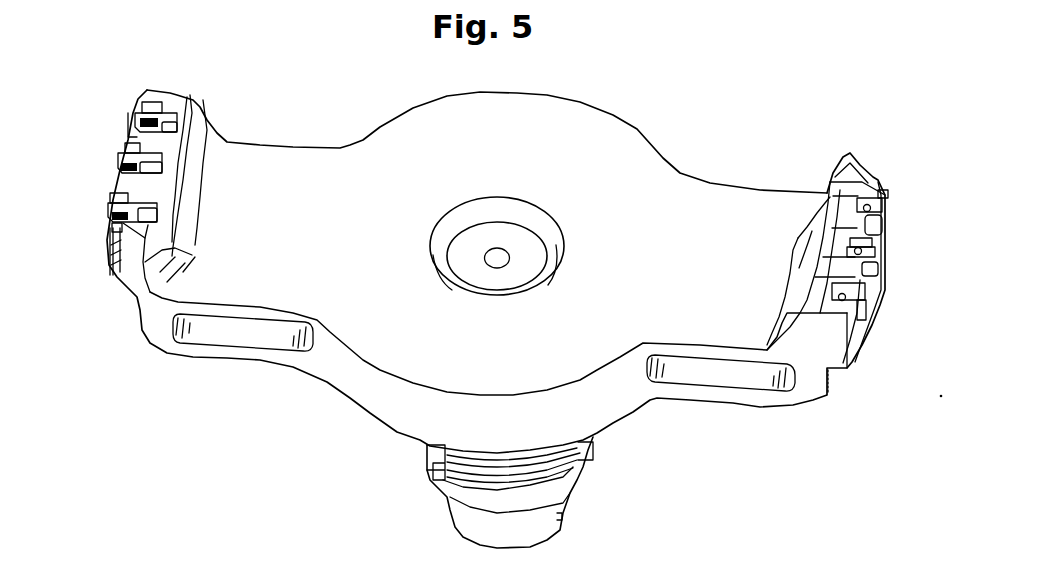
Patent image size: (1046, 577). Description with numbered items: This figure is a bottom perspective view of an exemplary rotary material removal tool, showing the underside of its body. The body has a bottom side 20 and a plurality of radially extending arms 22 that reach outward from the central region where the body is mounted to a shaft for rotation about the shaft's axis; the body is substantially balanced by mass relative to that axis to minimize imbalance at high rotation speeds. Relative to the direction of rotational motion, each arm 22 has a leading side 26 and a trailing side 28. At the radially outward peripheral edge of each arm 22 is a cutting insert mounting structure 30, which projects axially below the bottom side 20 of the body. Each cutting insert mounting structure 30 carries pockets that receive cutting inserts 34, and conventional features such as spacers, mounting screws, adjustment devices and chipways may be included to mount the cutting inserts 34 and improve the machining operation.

The bottom side 20 is at (497, 316).
The radially extending arm 22 is at (262, 252).
The leading side 26 is at (218, 352).
The trailing side 28 is at (714, 398).
The cutting insert mounting structure 30 is at (178, 190).
The cutting insert 34 is at (137, 117).